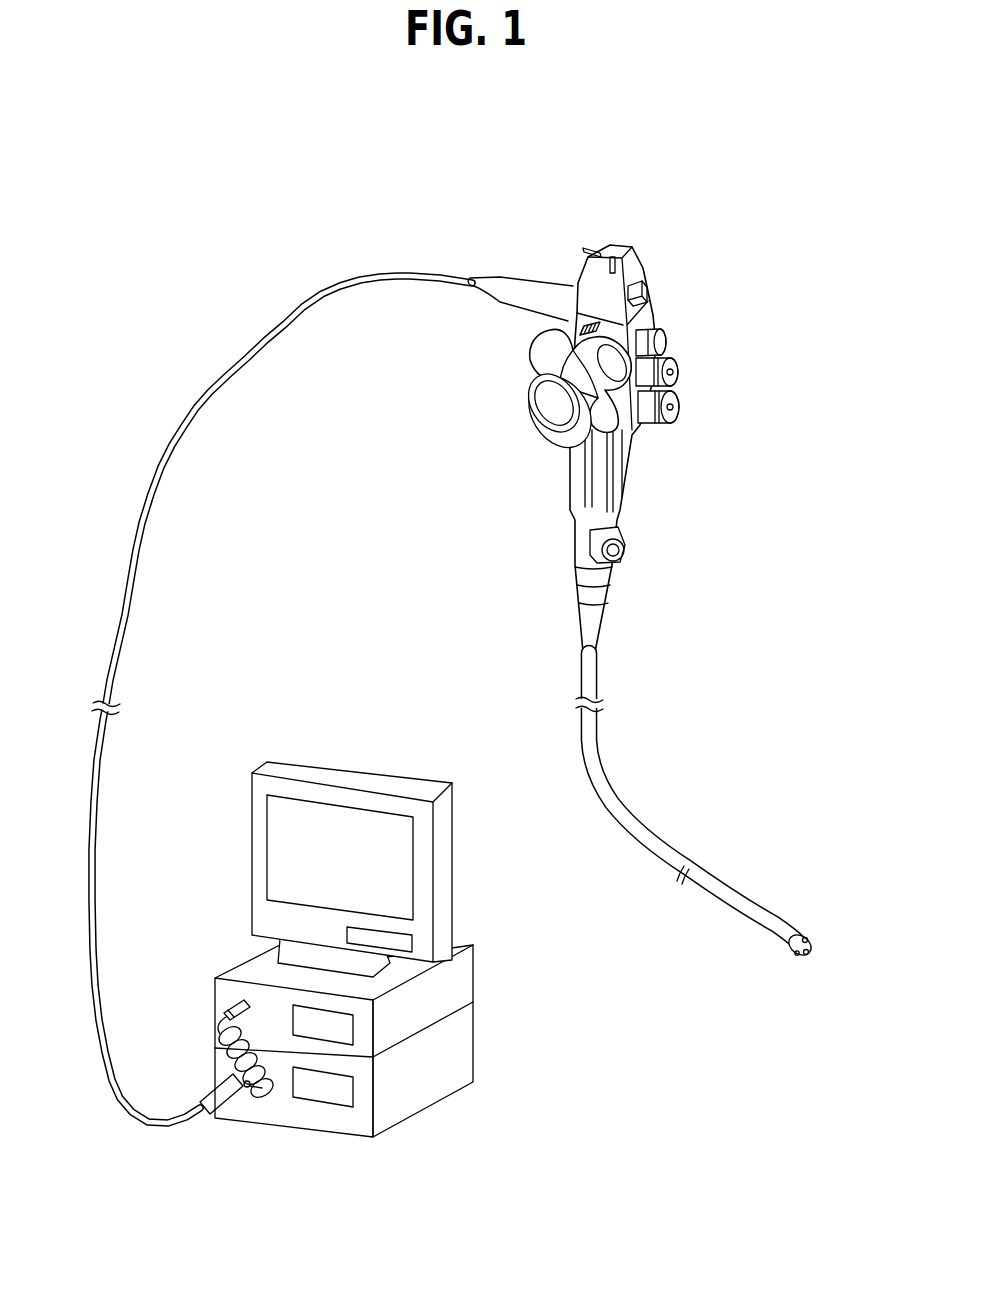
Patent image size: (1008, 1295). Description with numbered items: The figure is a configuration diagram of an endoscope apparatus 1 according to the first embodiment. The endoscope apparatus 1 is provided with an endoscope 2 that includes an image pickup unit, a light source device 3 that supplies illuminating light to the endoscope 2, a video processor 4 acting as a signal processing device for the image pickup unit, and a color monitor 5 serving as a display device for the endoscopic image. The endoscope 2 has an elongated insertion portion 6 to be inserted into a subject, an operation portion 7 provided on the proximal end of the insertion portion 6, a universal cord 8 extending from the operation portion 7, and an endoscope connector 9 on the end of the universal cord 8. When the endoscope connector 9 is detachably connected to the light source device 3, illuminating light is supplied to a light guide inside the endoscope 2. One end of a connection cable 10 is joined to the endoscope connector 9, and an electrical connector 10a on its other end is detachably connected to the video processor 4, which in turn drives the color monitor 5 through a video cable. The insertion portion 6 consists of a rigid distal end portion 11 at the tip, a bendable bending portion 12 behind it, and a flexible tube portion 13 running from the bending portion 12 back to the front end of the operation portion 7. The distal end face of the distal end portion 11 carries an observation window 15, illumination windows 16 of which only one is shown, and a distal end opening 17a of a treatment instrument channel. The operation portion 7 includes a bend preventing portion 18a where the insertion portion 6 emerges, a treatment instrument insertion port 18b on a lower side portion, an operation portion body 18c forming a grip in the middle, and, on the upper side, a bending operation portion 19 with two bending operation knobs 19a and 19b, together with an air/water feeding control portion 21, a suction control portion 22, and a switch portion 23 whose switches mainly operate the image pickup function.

The endoscope apparatus 1 is at (305, 217).
The endoscope 2 is at (535, 538).
The light source device 3 is at (410, 1088).
The video processor 4 is at (466, 975).
The color monitor 5 is at (443, 886).
The insertion portion 6 is at (846, 872).
The operation portion 7 is at (551, 469).
The universal cord 8 is at (209, 391).
The endoscope connector 9 is at (214, 1100).
The connection cable 10 is at (230, 1056).
The electrical connector 10a is at (226, 1016).
The distal end portion 11 is at (803, 934).
The bending portion 12 is at (662, 892).
The flexible tube portion 13 is at (609, 728).
The observation window 15 is at (808, 939).
The illumination window 16 is at (810, 952).
The distal end opening 17a is at (800, 957).
The bend preventing portion 18a is at (598, 621).
The treatment instrument insertion port 18b is at (625, 552).
The operation portion body 18c is at (620, 484).
The bending operation portion 19 is at (418, 352).
The bending operation knob 19a is at (538, 336).
The bending operation knob 19b is at (528, 394).
The air/water feeding control portion 21 is at (677, 408).
The suction control portion 22 is at (676, 373).
The switch portion 23 is at (646, 240).